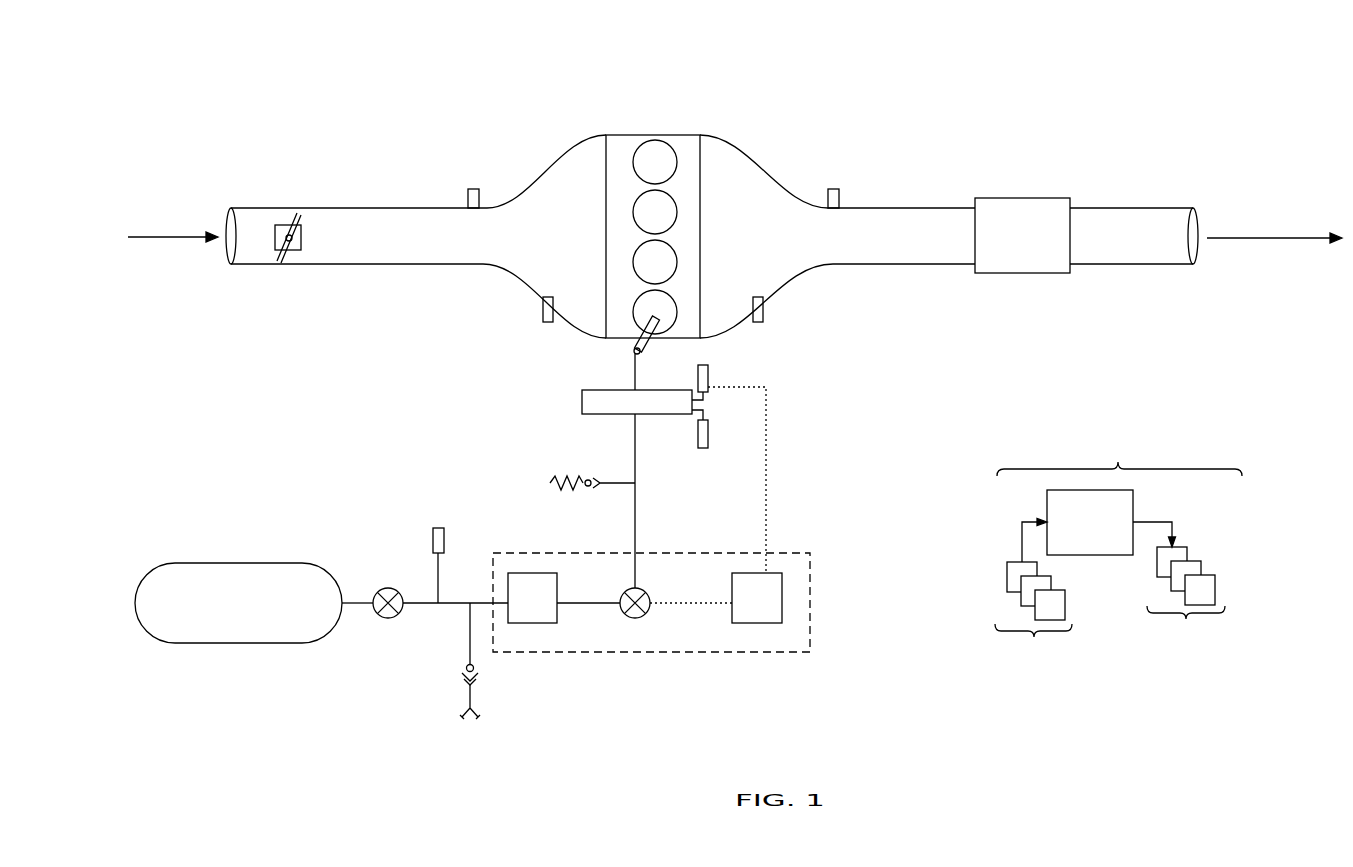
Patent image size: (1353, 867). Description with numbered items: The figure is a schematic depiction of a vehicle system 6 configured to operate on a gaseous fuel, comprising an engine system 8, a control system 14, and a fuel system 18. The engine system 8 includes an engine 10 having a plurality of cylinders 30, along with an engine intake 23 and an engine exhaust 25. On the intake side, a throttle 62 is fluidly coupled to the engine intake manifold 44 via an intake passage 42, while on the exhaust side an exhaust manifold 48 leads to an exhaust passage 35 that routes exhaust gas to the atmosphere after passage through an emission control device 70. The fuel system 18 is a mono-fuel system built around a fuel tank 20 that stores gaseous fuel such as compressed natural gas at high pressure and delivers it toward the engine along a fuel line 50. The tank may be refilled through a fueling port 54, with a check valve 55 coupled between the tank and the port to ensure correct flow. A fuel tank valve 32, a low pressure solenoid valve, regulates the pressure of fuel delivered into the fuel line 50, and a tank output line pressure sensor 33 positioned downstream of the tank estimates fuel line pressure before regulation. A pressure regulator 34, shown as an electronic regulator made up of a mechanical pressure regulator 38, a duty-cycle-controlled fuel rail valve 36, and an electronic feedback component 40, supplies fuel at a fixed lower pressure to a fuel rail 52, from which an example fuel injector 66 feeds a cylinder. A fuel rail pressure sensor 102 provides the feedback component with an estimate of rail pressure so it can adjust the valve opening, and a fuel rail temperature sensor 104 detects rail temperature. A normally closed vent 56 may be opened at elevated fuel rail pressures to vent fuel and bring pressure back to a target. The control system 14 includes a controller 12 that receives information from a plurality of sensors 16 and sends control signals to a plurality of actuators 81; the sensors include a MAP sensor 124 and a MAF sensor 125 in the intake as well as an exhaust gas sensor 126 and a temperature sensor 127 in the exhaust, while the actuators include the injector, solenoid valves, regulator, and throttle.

The vehicle system 6 is at (306, 134).
The engine system 8 is at (818, 102).
The engine 10 is at (702, 218).
The controller 12 is at (1090, 522).
The control system 14 is at (1119, 448).
The sensors 16 is at (1033, 598).
The fuel system 18 is at (275, 680).
The fuel tank 20 is at (240, 563).
The engine intake 23 is at (424, 190).
The engine exhaust 25 is at (1032, 148).
The cylinders 30 is at (676, 153).
The fuel tank valve 32 is at (382, 590).
The tank output line pressure sensor 33 is at (440, 528).
The pressure regulator 34 is at (790, 552).
The exhaust passage 35 is at (1143, 208).
The fuel rail valve 36 is at (643, 590).
The mechanical pressure regulator 38 is at (543, 612).
The electronic feedback component 40 is at (768, 612).
The intake passage 42 is at (335, 264).
The engine intake manifold 44 is at (578, 247).
The exhaust manifold 48 is at (778, 247).
The fuel line 50 is at (566, 605).
The fuel rail 52 is at (584, 390).
The fueling port 54 is at (470, 722).
The check valve 55 is at (467, 664).
The vent 56 is at (563, 472).
The throttle 62 is at (301, 250).
The fuel injector 66 is at (646, 345).
The emission control device 70 is at (1033, 246).
The actuators 81 is at (1181, 592).
The fuel rail pressure sensor 102 is at (708, 380).
The fuel rail temperature sensor 104 is at (708, 435).
The MAP sensor 124 is at (480, 205).
The MAF sensor 125 is at (543, 300).
The exhaust gas sensor 126 is at (763, 300).
The temperature sensor 127 is at (828, 201).